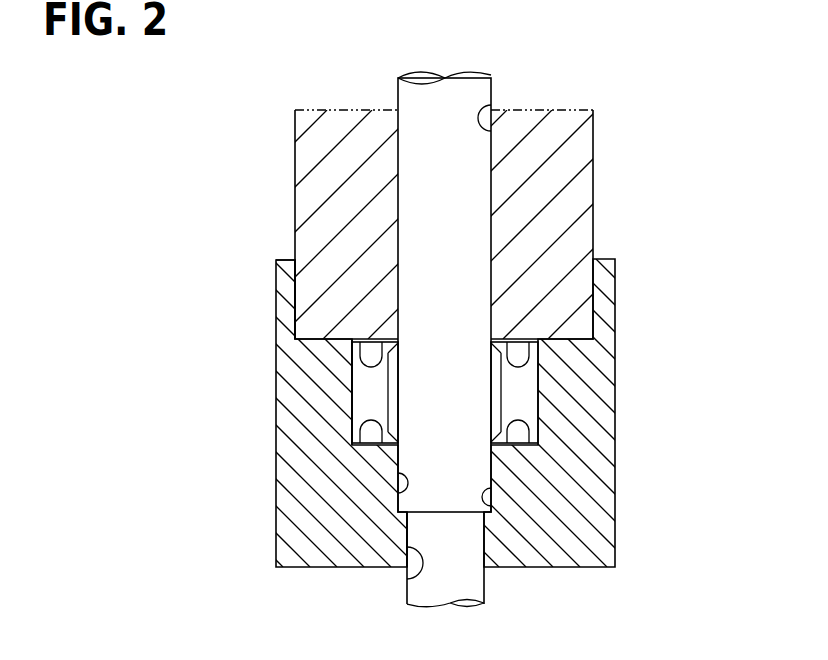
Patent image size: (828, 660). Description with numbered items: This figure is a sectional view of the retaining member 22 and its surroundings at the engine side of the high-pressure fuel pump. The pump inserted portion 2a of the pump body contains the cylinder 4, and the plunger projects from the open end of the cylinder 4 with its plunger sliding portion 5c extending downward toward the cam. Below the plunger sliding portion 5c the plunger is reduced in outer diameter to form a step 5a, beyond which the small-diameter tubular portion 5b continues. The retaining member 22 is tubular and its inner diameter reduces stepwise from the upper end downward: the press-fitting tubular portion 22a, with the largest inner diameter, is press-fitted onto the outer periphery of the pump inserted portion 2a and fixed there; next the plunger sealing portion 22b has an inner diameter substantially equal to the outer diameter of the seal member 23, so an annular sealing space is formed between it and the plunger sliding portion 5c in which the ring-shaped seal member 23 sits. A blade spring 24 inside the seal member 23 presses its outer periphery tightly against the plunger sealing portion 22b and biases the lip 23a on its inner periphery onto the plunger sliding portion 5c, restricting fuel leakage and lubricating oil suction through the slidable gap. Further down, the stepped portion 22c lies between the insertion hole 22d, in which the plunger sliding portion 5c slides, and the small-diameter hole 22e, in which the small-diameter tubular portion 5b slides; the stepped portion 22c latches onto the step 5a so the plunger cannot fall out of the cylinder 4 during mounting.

The pump inserted portion 2a is at (338, 165).
The cylinder hole 4 is at (491, 100).
The plunger sliding portion 5c is at (466, 203).
The step 5a is at (486, 541).
The small-diameter tubular portion 5b is at (462, 583).
The retaining member 22 is at (623, 298).
The press-fitting tubular portion 22a is at (285, 283).
The plunger sealing portion 22b is at (345, 425).
The stepped portion 22c is at (497, 491).
The insertion hole 22d is at (396, 498).
The small-diameter hole 22e is at (409, 580).
The seal member 23 is at (370, 398).
The lip 23a is at (537, 437).
The blade spring 24 is at (527, 352).